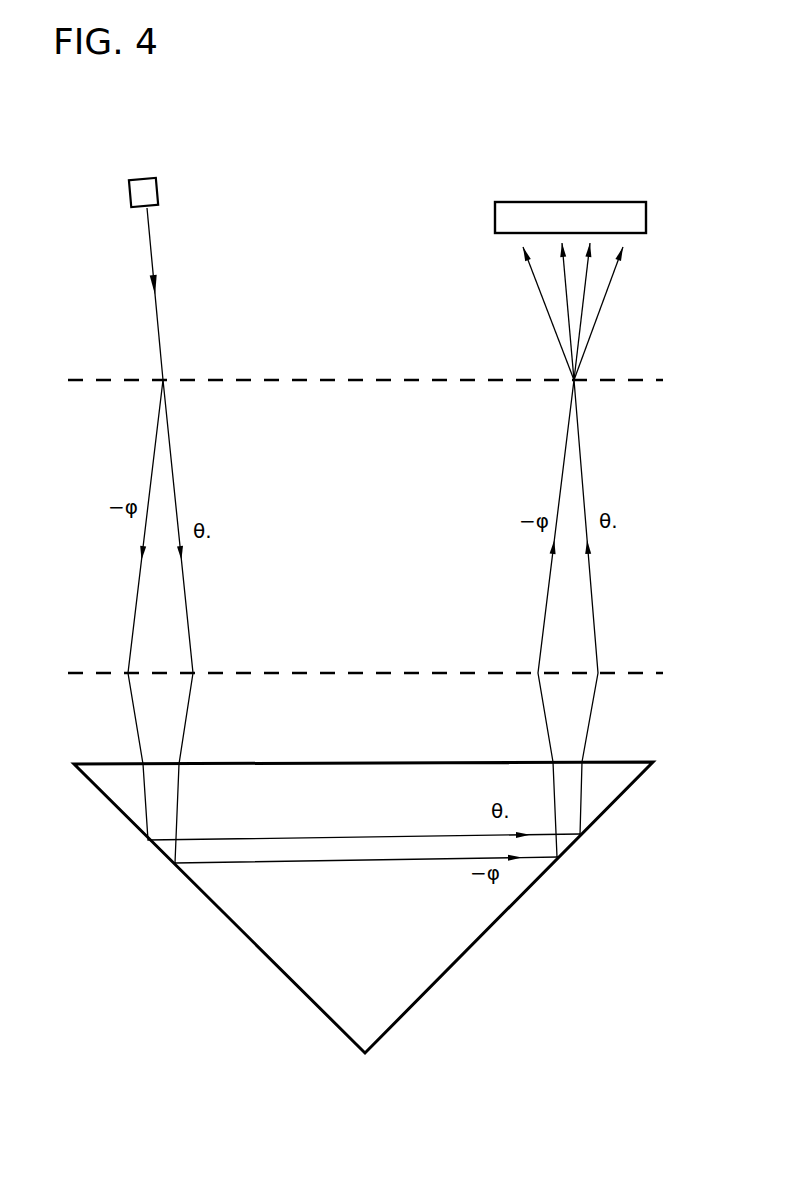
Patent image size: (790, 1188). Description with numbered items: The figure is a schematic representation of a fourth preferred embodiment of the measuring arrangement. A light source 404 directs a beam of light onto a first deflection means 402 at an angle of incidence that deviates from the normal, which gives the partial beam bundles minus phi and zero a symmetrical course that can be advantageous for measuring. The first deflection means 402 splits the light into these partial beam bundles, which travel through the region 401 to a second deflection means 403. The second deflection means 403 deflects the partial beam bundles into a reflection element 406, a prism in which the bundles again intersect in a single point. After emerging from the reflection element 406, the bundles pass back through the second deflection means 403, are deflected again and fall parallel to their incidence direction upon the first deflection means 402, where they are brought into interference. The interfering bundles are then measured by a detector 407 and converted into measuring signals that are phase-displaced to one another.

The optical medium 401 is at (403, 528).
The first deflection means 402 is at (128, 380).
The second deflection means 403 is at (106, 673).
The light source 404 is at (157, 193).
The reflection element 406 is at (396, 931).
The detector 407 is at (577, 214).